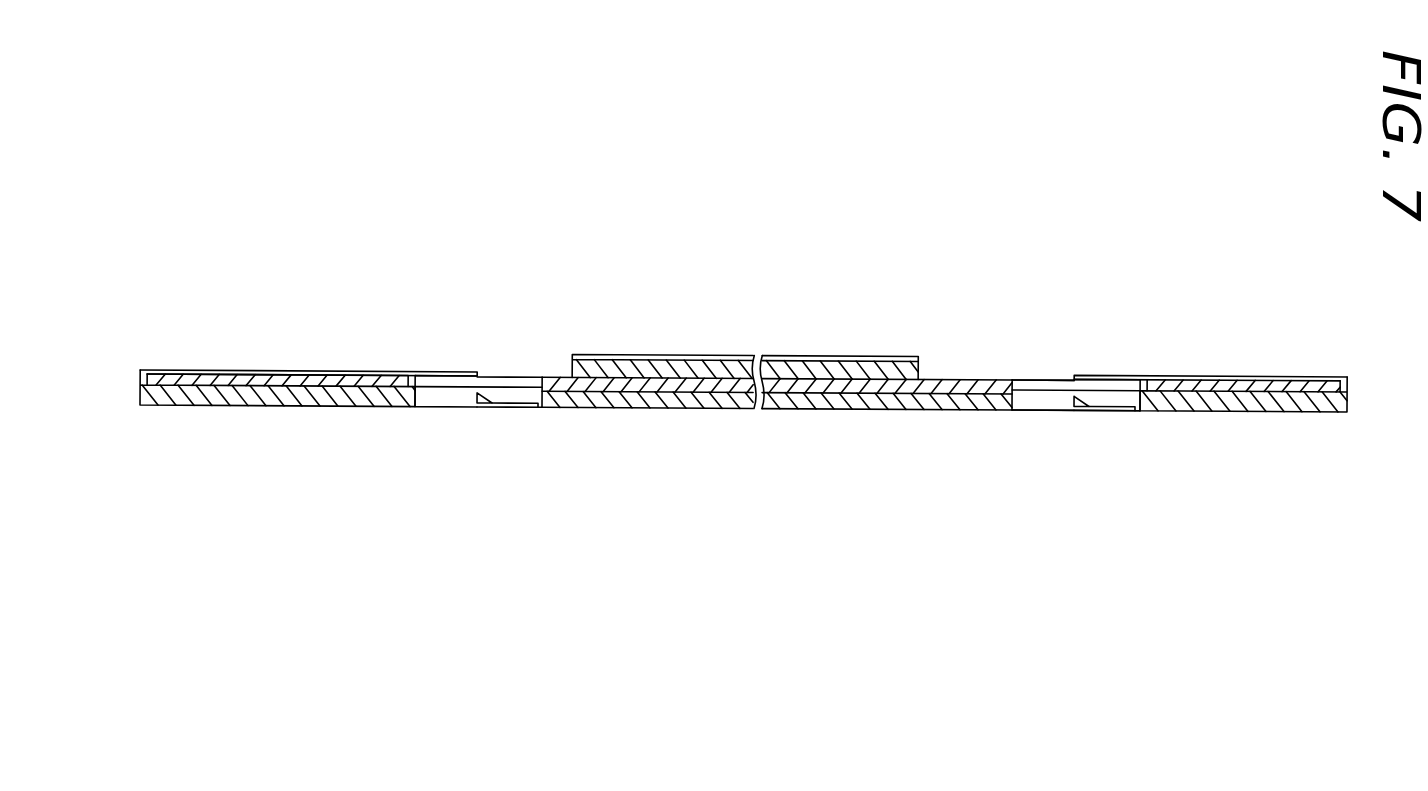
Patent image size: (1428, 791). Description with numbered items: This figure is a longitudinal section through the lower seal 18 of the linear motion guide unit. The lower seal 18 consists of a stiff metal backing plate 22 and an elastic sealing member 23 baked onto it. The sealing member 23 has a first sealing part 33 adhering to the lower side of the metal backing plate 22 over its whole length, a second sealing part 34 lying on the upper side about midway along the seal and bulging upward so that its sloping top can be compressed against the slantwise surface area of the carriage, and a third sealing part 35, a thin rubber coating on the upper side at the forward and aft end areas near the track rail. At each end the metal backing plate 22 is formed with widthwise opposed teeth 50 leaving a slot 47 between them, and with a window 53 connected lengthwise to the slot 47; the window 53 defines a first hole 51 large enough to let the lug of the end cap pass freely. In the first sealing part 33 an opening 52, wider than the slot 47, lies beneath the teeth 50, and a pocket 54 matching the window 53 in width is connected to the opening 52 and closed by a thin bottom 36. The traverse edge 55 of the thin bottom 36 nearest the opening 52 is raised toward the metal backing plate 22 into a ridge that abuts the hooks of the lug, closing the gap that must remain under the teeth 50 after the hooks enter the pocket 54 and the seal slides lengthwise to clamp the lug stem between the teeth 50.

The lower seal 18 is at (985, 343).
The metal backing plate 22 is at (950, 378).
The sealing member 23 is at (822, 398).
The first sealing part 33 is at (892, 398).
The second sealing part 34 is at (857, 366).
The third sealing part 35 is at (1238, 377).
The thin bottom 36 is at (1113, 403).
The slot 47 is at (1040, 390).
The teeth 50 is at (1100, 383).
The first hole 51 is at (1107, 382).
The opening 52 is at (1052, 390).
The window 53 is at (1118, 384).
The pocket 54 is at (1130, 402).
The traverse edge 55 is at (1076, 402).